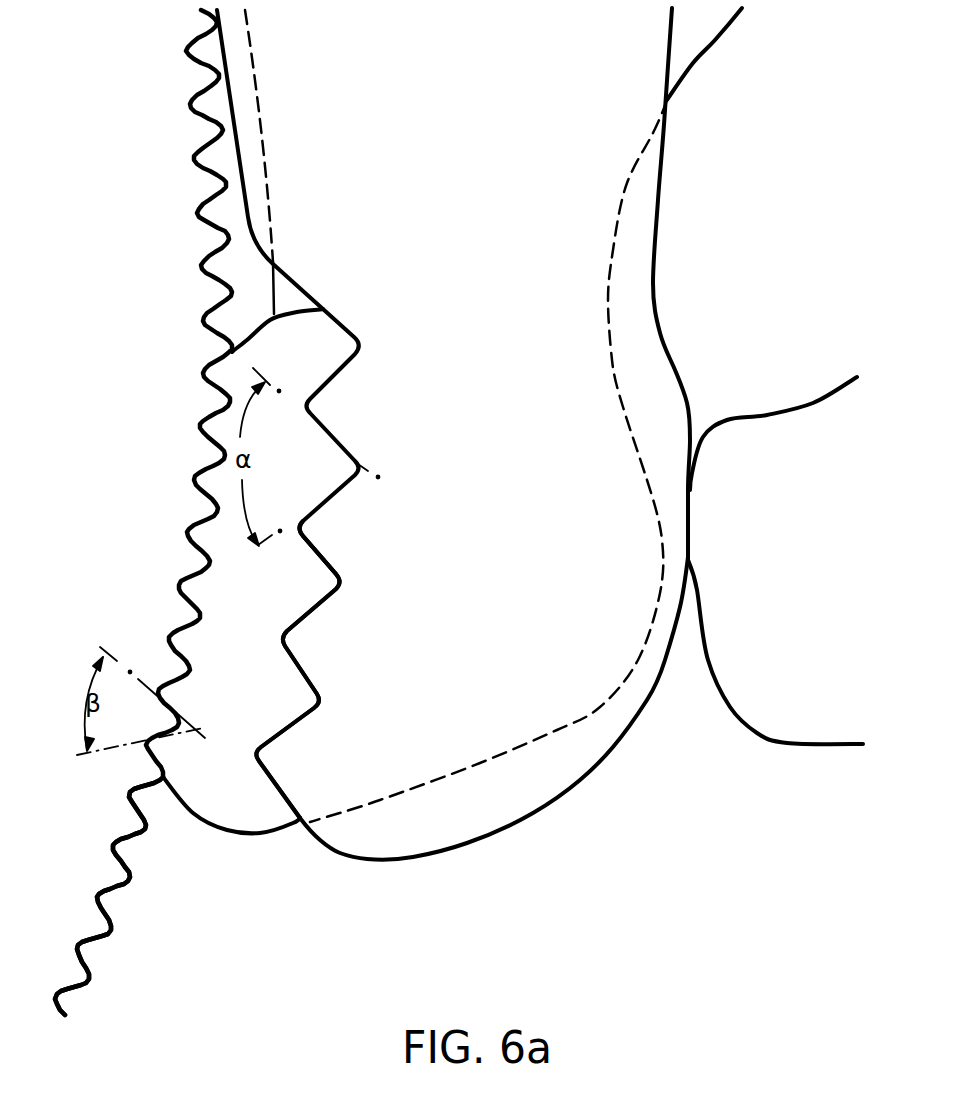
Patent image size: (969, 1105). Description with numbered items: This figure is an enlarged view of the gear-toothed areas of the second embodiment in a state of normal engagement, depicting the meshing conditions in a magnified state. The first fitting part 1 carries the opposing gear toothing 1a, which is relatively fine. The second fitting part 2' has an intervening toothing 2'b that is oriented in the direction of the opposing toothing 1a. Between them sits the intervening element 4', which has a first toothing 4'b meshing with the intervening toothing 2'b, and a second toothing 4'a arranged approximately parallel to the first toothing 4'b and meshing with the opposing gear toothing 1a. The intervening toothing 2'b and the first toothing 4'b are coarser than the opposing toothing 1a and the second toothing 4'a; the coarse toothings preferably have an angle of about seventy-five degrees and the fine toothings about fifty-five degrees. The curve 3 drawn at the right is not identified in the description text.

The first fitting part 1 is at (113, 386).
The opposing gear toothing 1a is at (100, 900).
The second fitting part 2' is at (689, 284).
The intervening toothing 2'b is at (294, 556).
The transition curve 3 is at (768, 720).
The intervening element 4' is at (452, 443).
The second toothing 4'a is at (230, 393).
The first toothing 4'b is at (330, 675).